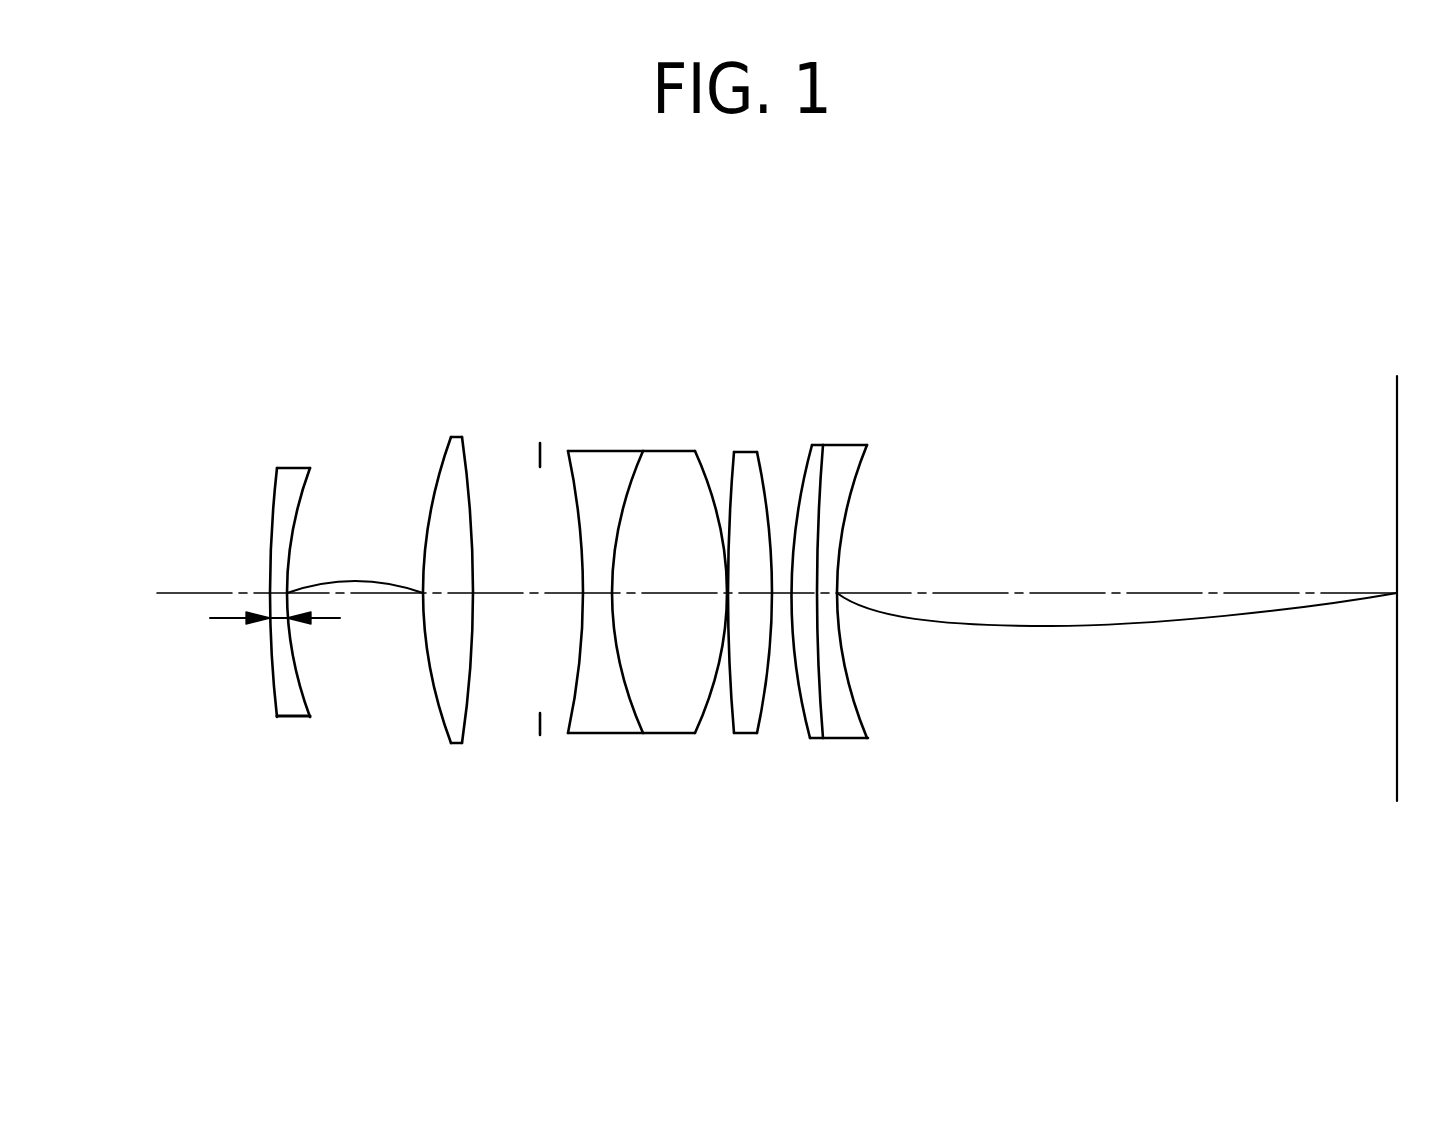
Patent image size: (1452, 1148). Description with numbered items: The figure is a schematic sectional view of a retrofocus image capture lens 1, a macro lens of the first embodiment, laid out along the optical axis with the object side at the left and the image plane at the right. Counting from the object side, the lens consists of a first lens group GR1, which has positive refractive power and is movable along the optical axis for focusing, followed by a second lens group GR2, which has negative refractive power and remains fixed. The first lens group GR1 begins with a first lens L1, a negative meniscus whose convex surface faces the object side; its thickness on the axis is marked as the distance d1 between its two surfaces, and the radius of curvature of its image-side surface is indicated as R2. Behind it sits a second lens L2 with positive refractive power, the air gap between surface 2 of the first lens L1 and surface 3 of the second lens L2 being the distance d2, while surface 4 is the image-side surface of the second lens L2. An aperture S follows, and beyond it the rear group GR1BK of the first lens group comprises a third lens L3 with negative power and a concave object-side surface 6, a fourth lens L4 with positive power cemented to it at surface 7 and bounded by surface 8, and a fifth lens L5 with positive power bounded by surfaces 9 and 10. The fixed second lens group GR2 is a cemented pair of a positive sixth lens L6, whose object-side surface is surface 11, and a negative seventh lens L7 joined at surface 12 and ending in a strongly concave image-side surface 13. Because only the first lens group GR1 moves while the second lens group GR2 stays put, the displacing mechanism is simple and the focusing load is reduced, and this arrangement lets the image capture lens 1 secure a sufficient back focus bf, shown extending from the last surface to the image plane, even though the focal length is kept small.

The image capture lens 1 is at (1318, 275).
The surface of the first lens 2 is at (310, 717).
The surface of the second lens 3 is at (438, 742).
The fourth lens surface 4 is at (465, 742).
The sixth lens surface 6 is at (565, 733).
The seventh lens surface 7 is at (640, 733).
The eighth lens surface 8 is at (695, 733).
The ninth lens surface 9 is at (728, 733).
The tenth lens surface 10 is at (758, 733).
The eleventh lens surface 11 is at (809, 738).
The twelfth lens surface 12 is at (825, 740).
The thirteenth lens surface 13 is at (858, 728).
The aperture S is at (540, 735).
The first lens L1 is at (291, 718).
The second lens L2 is at (455, 745).
The third lens L3 is at (603, 733).
The fourth lens L4 is at (671, 733).
The fifth lens L5 is at (750, 733).
The sixth lens L6 is at (823, 740).
The seventh lens L7 is at (868, 738).
The first lens group GR1 is at (778, 333).
The second lens group GR2 is at (875, 333).
The rear group of the first lens group GR1BK is at (767, 418).
The distance between lens surfaces of the first lens d1 is at (251, 619).
The distance between surface 2 and surface 3 d2 is at (355, 556).
The radius of curvature of the second surface R2 is at (308, 685).
The back focus bf is at (1117, 642).